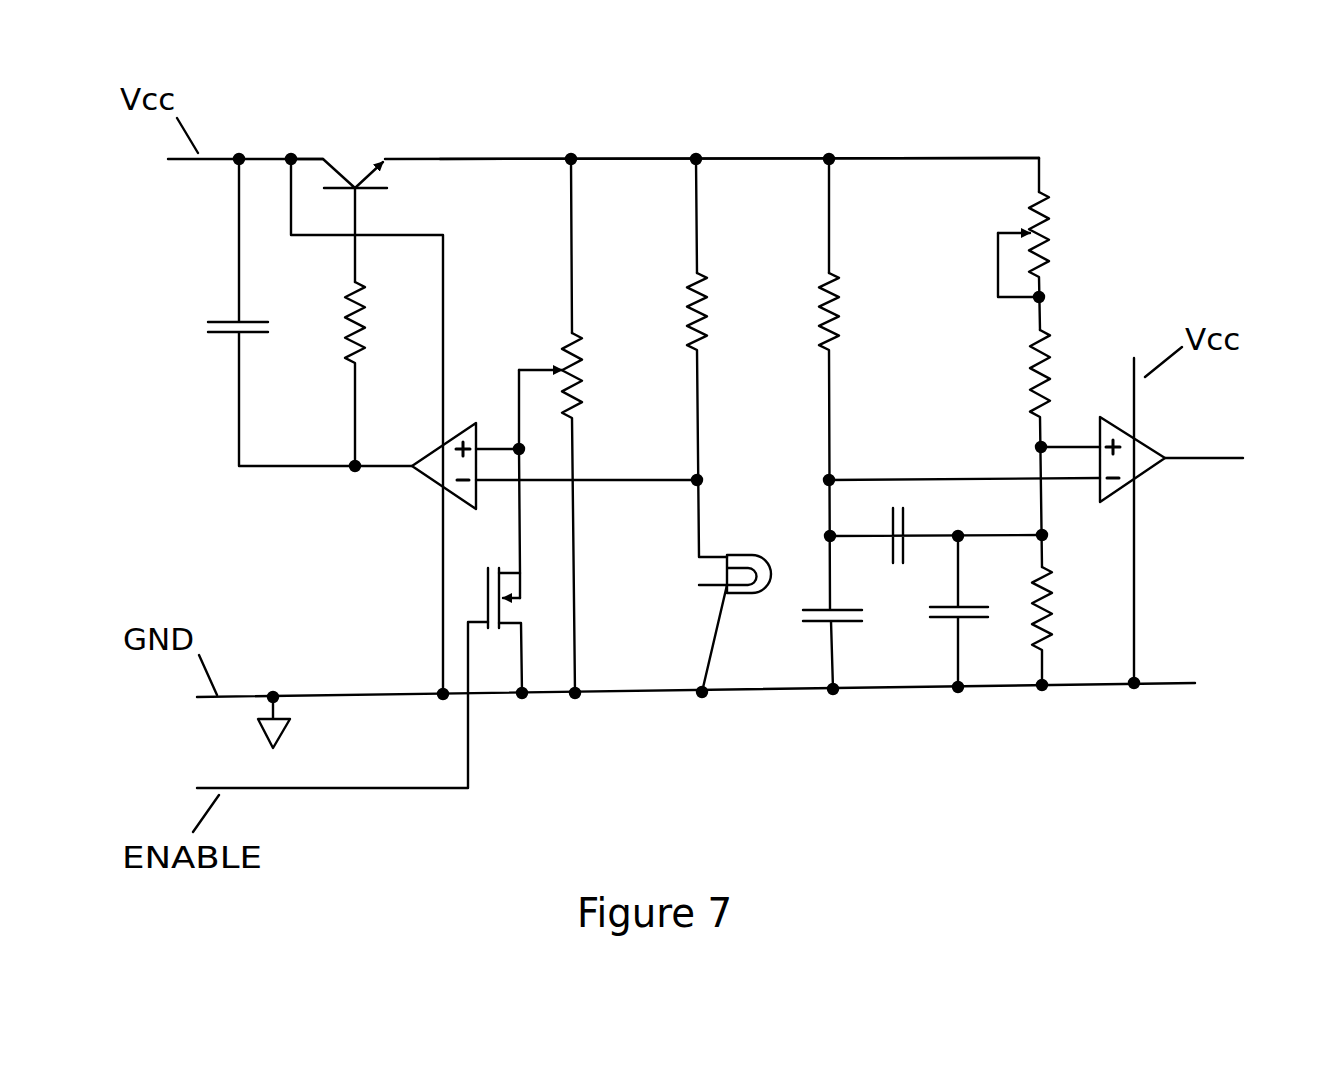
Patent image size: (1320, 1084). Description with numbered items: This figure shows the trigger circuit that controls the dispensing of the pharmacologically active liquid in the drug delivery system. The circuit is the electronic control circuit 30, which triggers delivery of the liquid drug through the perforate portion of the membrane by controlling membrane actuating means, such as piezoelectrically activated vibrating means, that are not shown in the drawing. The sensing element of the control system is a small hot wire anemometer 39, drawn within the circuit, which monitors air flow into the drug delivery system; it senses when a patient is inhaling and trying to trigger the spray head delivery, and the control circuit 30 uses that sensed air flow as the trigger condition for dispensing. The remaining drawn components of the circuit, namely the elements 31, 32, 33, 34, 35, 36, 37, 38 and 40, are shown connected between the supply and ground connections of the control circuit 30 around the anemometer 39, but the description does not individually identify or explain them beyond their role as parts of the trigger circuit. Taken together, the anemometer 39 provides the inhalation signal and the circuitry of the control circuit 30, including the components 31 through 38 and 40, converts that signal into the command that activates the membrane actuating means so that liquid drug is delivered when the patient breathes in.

The electronic control circuit 30 is at (874, 738).
The first comparator 31 is at (425, 482).
The second comparator 32 is at (1153, 480).
The non-inverting input of second comparator 33 is at (1072, 437).
The inverting input of second comparator 34 is at (1072, 488).
The output of second comparator 35 is at (1210, 447).
The variable resistor (potentiometer) 36 is at (1053, 208).
The variable resistor (potentiometer) 37 is at (560, 343).
The MOSFET transistor 38 is at (527, 617).
The hot wire anemometer 39 is at (745, 602).
The supply voltage rail 40 is at (733, 152).